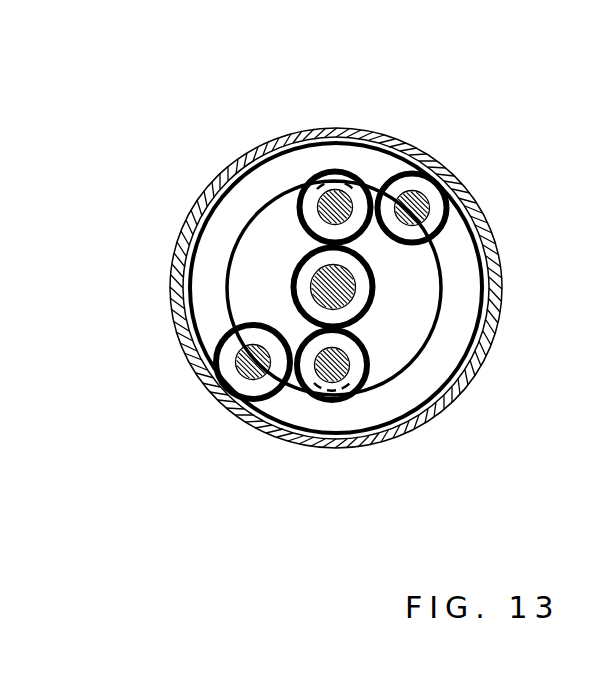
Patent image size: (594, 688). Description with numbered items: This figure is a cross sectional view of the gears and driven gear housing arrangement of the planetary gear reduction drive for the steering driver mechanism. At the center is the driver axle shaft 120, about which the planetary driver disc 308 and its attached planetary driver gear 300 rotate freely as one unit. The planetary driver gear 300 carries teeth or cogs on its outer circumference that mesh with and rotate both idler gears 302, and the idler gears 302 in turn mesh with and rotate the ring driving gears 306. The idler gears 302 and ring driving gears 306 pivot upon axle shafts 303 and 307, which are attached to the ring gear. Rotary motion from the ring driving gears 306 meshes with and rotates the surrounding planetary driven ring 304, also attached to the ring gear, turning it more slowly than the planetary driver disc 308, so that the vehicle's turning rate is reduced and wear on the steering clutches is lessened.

The driver axle shaft 120 is at (360, 293).
The planetary driver gear 300 is at (295, 288).
The idler gear 302 is at (337, 173).
The axle shaft 303 is at (318, 202).
The planetary driven ring 304 is at (213, 175).
The ring driving gear 306 is at (420, 172).
The axle shaft 307 is at (428, 209).
The planetary driver disc 308 is at (402, 333).